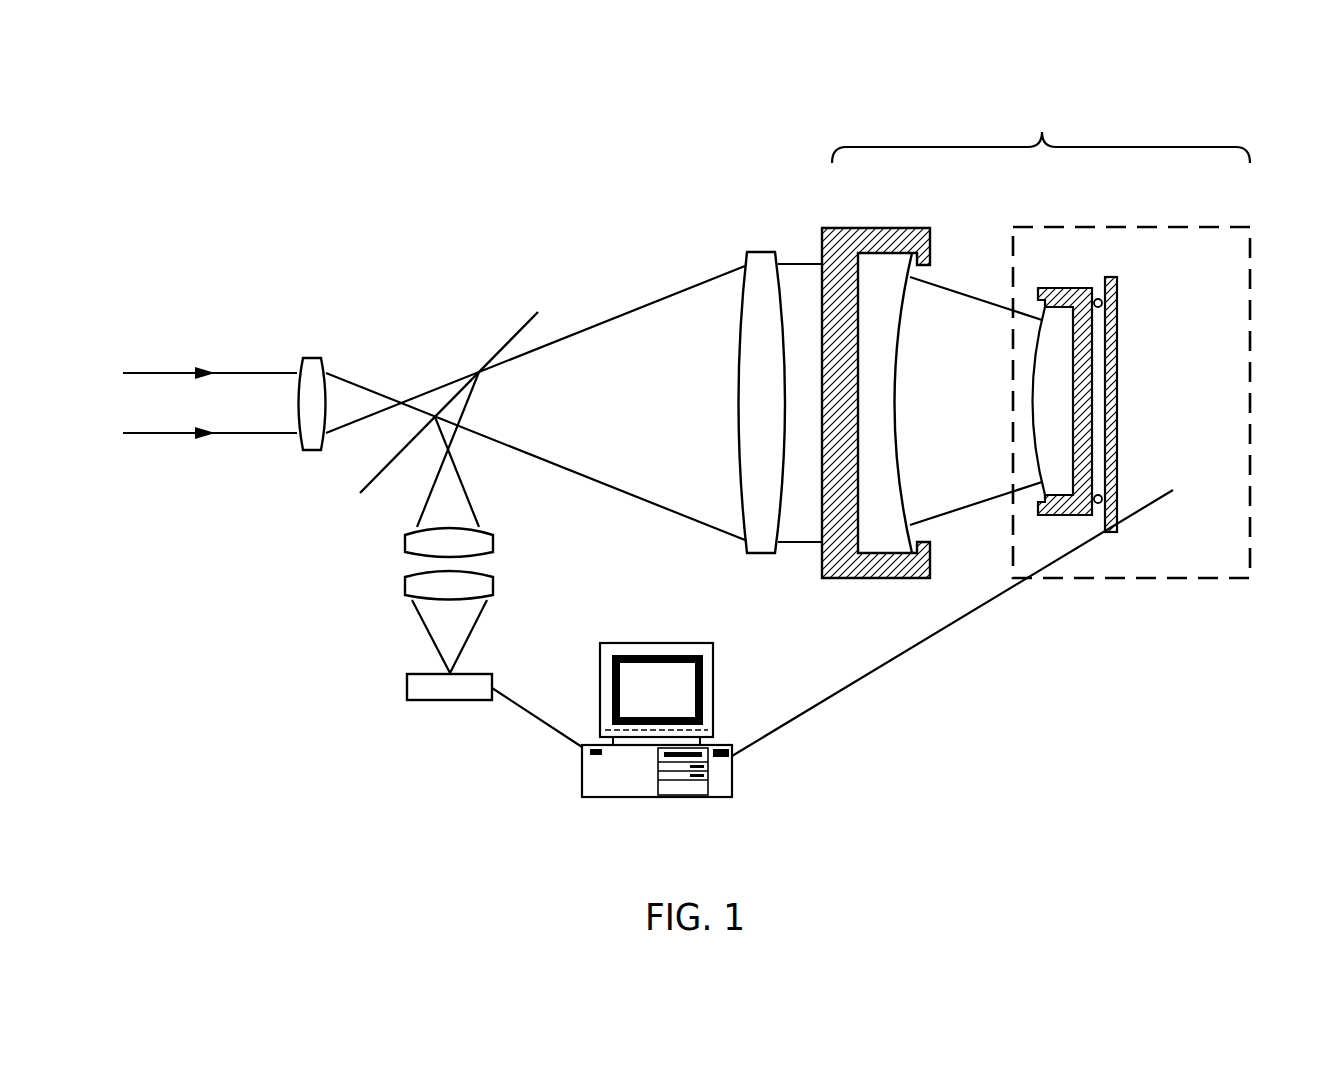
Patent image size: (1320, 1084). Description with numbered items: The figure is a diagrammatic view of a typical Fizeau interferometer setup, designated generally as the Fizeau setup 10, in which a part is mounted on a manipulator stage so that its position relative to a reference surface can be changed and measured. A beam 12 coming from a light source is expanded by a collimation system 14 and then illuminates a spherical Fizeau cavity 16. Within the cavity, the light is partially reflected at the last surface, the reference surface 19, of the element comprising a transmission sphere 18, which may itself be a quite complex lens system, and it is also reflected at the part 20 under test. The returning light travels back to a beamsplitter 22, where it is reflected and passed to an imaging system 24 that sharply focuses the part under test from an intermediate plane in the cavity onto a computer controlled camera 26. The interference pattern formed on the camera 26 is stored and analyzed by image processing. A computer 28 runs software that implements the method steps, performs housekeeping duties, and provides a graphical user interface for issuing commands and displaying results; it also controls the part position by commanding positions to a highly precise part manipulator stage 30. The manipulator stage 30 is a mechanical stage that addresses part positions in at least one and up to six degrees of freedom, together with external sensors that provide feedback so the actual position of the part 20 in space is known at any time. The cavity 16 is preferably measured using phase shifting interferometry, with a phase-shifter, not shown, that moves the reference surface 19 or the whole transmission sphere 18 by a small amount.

The Fizeau setup 10 is at (716, 146).
The beam 12 is at (272, 380).
The collimation system 14 is at (755, 288).
The spherical Fizeau cavity 16 is at (1040, 157).
The transmission sphere 18 is at (885, 542).
The reference surface 19 is at (888, 392).
The part under test 20 is at (1058, 475).
The beamsplitter 22 is at (500, 348).
The imaging system 24 is at (405, 568).
The camera 26 is at (407, 688).
The computer 28 is at (580, 758).
The part manipulator stage 30 is at (1118, 308).